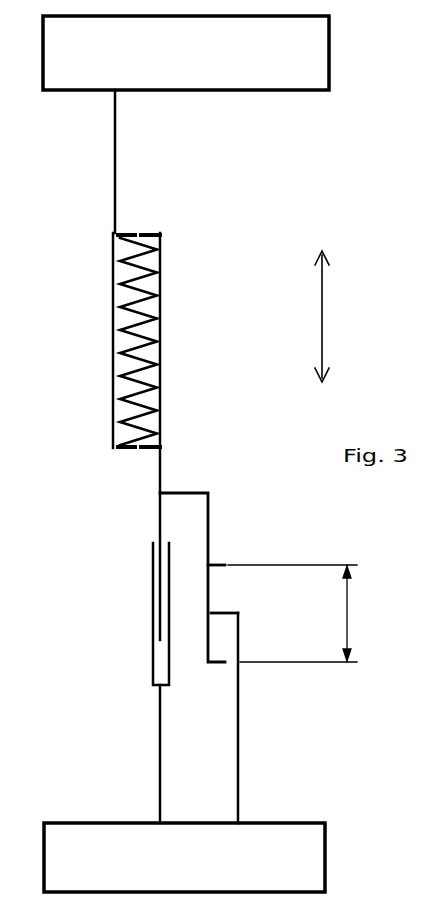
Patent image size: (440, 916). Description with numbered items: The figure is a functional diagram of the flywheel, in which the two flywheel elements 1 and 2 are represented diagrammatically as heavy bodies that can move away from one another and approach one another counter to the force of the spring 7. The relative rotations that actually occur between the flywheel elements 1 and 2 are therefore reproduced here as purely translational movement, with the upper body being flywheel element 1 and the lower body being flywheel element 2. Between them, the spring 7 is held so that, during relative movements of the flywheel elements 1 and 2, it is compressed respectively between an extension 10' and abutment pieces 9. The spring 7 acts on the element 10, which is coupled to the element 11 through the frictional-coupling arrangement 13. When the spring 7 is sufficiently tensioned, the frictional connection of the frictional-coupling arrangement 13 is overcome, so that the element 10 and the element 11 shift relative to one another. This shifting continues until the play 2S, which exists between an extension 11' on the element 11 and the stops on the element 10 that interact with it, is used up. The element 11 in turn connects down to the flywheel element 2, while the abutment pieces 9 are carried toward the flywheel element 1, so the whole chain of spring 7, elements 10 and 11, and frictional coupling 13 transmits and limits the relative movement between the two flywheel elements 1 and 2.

The flywheel element 1 is at (296, 70).
The flywheel element 2 is at (310, 867).
The spring 7 is at (155, 294).
The abutment pieces 9 is at (116, 231).
The element 10 is at (198, 555).
The extension 10' is at (156, 347).
The element 11 is at (199, 718).
The extension 11' is at (243, 598).
The frictional-coupling arrangement 13 is at (148, 598).
The play 2S is at (352, 613).